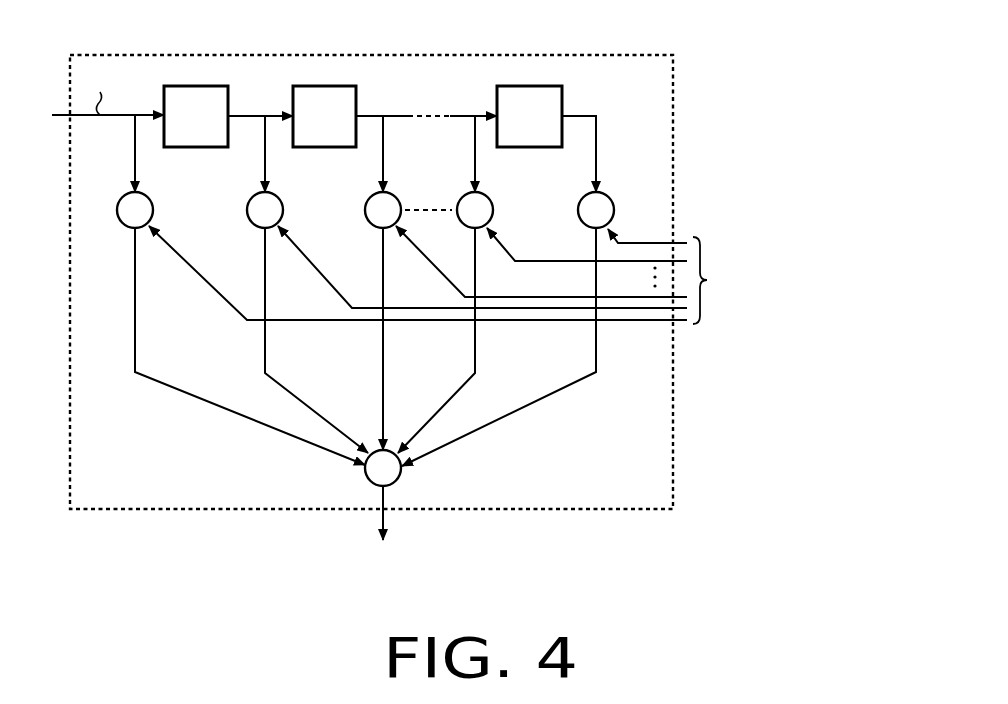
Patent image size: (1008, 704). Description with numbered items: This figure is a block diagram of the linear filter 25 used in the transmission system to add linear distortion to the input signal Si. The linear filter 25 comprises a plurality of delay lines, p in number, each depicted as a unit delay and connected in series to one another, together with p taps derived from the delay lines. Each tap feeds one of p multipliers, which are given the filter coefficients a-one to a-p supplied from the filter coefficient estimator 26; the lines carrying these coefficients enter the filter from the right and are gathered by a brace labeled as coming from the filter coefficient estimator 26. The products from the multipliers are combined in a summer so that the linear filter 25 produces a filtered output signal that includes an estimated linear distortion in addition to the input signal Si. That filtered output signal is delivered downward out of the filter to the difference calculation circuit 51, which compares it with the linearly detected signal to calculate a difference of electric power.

The linear filter 25 is at (395, 55).
The filter coefficient estimator 26 is at (785, 292).
The difference calculation circuit 51 is at (380, 543).